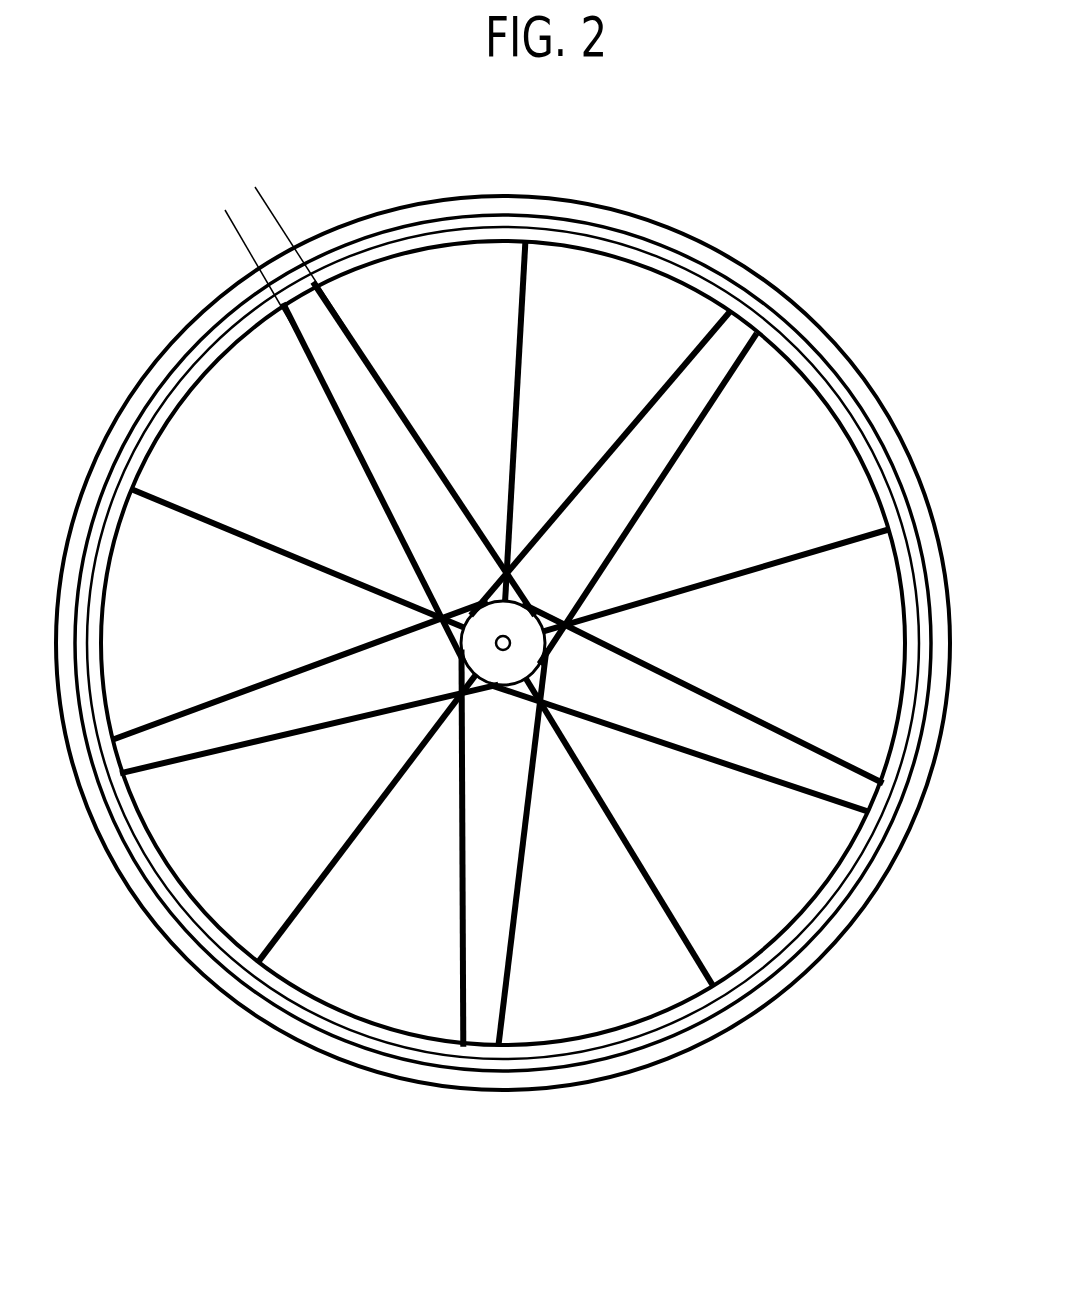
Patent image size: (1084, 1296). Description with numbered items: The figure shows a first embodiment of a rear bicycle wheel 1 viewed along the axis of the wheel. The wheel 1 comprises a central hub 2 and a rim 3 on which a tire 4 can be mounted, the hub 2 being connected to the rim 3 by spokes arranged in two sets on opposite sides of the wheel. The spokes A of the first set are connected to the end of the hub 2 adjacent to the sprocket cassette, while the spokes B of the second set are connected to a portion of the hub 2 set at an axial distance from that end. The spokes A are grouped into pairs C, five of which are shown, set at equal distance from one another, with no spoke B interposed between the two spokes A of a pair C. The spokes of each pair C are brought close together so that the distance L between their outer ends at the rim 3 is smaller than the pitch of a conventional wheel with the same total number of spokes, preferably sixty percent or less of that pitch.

The wheel 1 is at (833, 240).
The hub 2 is at (533, 652).
The rim 3 is at (597, 258).
The tire 4 is at (609, 214).
The spokes of the first set A is at (514, 560).
The spokes of the second set B is at (516, 355).
The pairs of spokes C is at (708, 451).
The distance between spokes of a pair L is at (307, 167).